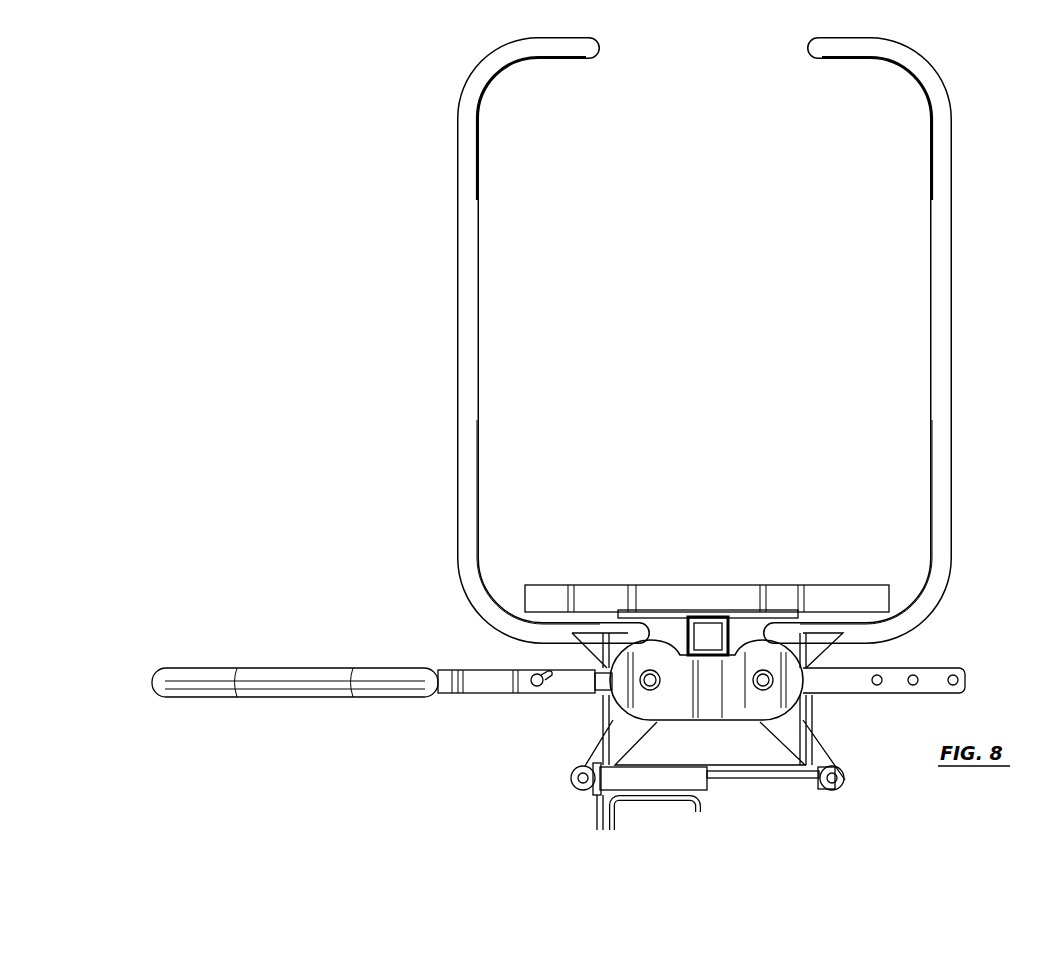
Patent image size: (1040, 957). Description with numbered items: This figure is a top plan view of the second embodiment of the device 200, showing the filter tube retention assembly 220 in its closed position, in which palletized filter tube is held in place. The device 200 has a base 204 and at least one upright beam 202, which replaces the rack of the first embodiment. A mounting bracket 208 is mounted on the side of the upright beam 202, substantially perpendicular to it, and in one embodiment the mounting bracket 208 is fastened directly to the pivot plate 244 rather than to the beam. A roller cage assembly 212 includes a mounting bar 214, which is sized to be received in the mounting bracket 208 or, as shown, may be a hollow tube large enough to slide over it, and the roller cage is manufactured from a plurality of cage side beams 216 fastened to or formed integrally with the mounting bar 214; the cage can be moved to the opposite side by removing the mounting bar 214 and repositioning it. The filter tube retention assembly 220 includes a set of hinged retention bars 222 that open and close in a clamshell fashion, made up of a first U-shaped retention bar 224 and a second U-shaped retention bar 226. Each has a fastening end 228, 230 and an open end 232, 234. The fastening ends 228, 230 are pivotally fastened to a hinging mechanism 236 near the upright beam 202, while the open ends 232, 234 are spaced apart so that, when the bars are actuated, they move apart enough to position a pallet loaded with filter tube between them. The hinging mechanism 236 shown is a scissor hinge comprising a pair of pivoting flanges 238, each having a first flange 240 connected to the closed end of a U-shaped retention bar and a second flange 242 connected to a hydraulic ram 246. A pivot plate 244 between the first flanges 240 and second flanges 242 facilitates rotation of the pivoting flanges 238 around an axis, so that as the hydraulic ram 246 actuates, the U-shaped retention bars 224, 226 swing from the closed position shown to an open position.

The device 200 is at (372, 190).
The upright beam 202 is at (707, 578).
The base 204 is at (630, 610).
The mounting bracket 208 is at (932, 672).
The roller cage assembly 212 is at (382, 676).
The mounting bar 214 is at (480, 685).
The cage side beams 216 is at (258, 676).
The filter tube retention assembly 220 is at (697, 350).
The hinged retention bars 222 is at (420, 102).
The first U-shaped retention bar 224 is at (462, 252).
The second U-shaped retention bar 226 is at (948, 252).
The fastening end 228 is at (512, 620).
The fastening end 230 is at (875, 637).
The open end 232 is at (568, 46).
The open end 234 is at (838, 45).
The hinging mechanism 236 is at (718, 629).
The pivoting flanges 238 is at (570, 722).
The first flange 240 is at (593, 648).
The second flange 242 is at (588, 758).
The pivot plate 244 is at (740, 626).
The hydraulic ram 246 is at (660, 770).